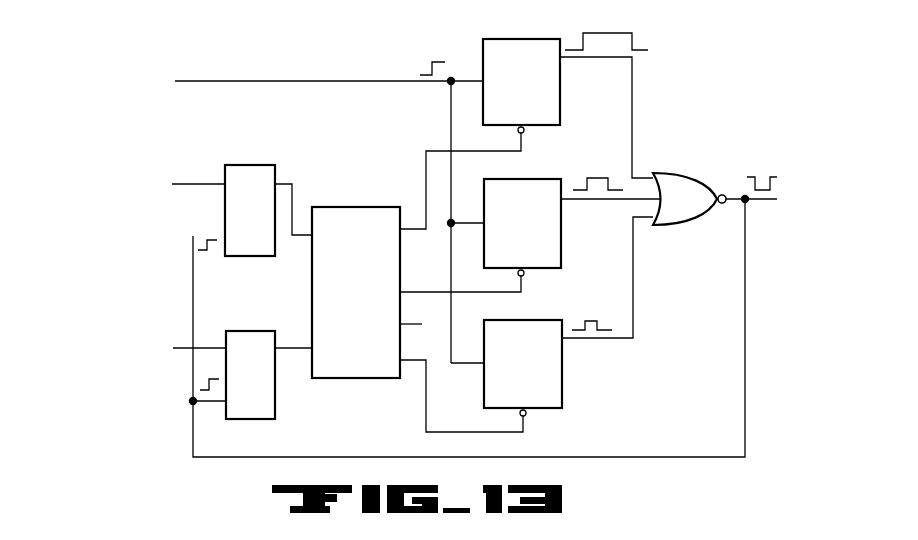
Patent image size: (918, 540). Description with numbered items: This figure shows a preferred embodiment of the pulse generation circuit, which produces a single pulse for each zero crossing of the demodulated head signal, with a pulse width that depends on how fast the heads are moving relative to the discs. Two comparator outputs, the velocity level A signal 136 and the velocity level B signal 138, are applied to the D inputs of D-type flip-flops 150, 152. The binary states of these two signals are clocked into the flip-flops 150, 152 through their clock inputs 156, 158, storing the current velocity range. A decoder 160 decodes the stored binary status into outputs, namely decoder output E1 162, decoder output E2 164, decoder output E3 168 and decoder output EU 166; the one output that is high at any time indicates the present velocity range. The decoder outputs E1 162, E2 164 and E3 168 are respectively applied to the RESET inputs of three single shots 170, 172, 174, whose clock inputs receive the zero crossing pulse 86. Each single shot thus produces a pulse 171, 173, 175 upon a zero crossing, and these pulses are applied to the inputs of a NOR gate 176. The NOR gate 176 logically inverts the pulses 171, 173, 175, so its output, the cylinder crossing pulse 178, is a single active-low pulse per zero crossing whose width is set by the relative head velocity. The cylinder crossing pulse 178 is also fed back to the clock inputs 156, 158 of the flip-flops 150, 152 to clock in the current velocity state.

The zero crossing pulse 86 is at (143, 33).
The velocity level A signal 136 is at (160, 157).
The velocity level B signal 138 is at (122, 325).
The D-type flip-flop 150 is at (262, 163).
The D-type flip-flop 152 is at (252, 328).
The clock input 156 is at (225, 233).
The clock input 158 is at (225, 403).
The decoder 160 is at (358, 205).
The decoder output E1 162 is at (412, 232).
The decoder output E2 164 is at (407, 292).
The decoder output EU 166 is at (404, 327).
The decoder output E3 168 is at (403, 358).
The single shot 170 is at (513, 39).
The pulse output of single shot 170 171 is at (633, 95).
The single shot 172 is at (530, 176).
The pulse output of single shot 172 173 is at (585, 200).
The single shot 174 is at (533, 319).
The pulse output of single shot 174 175 is at (605, 340).
The NOR gate 176 is at (688, 173).
The cylinder crossing pulse 178 is at (817, 168).